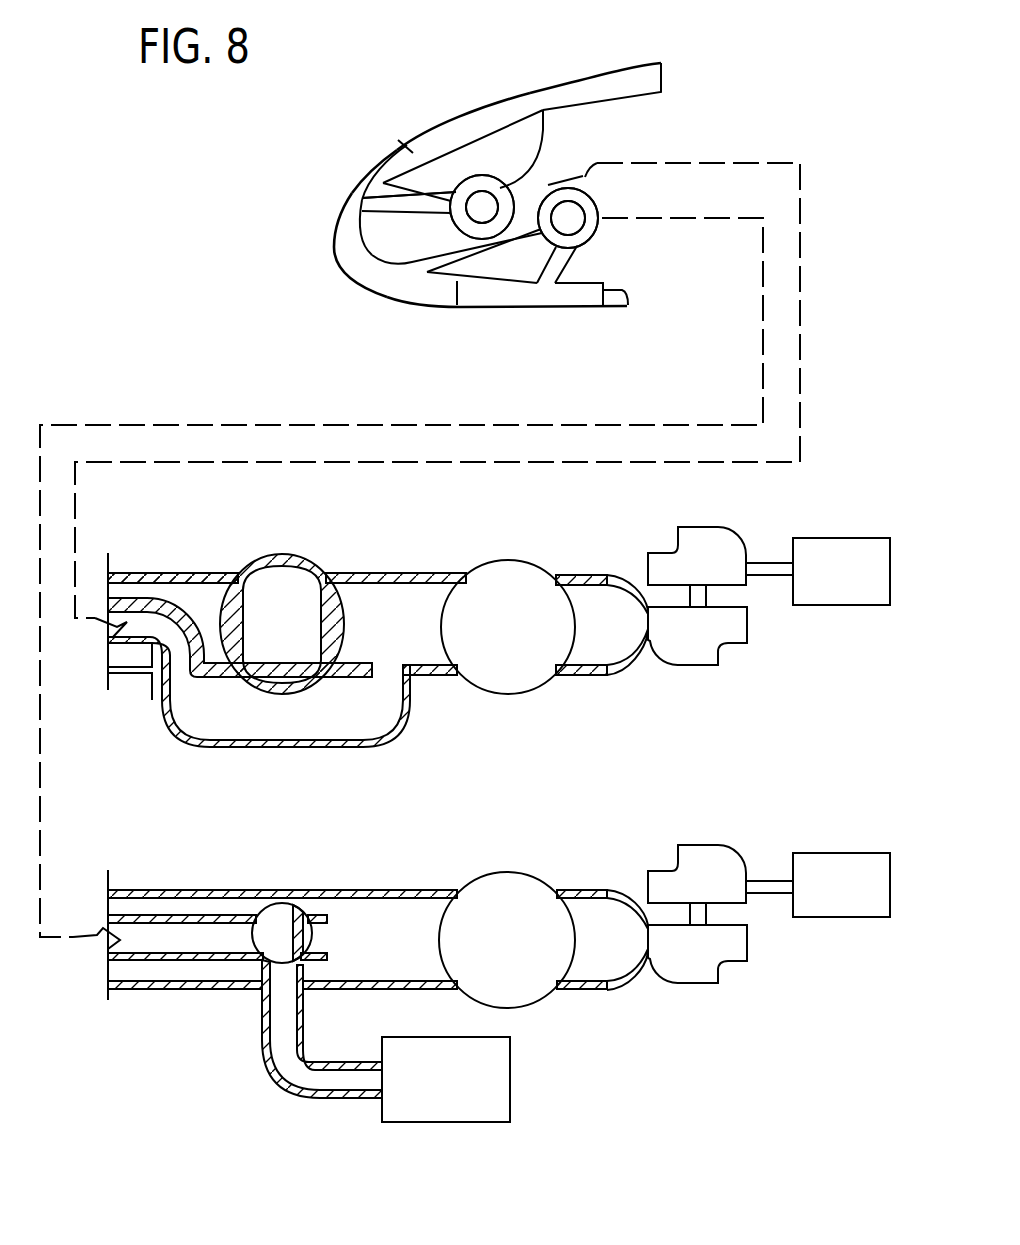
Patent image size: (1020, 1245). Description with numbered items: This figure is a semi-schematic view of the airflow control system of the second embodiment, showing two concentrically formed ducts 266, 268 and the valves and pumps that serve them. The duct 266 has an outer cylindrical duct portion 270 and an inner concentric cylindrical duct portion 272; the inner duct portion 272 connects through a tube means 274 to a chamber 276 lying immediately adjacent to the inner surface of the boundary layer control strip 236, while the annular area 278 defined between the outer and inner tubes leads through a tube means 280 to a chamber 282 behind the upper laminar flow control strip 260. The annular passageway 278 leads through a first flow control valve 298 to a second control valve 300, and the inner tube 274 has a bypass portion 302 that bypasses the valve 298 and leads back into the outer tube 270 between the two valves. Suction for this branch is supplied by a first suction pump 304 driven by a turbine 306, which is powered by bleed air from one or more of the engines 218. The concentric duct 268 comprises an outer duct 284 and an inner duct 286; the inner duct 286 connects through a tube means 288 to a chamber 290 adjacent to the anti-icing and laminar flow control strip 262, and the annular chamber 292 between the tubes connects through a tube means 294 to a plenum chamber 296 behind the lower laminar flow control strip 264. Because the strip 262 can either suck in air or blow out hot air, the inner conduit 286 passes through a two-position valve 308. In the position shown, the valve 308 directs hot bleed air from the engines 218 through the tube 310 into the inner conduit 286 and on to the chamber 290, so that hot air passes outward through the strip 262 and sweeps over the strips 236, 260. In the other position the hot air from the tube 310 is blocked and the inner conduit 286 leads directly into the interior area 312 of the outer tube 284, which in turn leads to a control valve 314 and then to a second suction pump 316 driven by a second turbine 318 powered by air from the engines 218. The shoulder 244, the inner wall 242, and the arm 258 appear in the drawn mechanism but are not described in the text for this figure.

The engines 218 is at (822, 548).
The boundary layer control strip 236 is at (347, 185).
The inner wall 242 is at (360, 248).
The housing shoulder 244 is at (403, 146).
The arm 258 is at (690, 62).
The upper laminar flow control strip 260 is at (493, 178).
The anti-icing and laminar flow control strip 262 is at (365, 283).
The lower laminar flow control strip 264 is at (543, 310).
The concentrically formed duct 266 is at (477, 177).
The concentric duct 268 is at (580, 176).
The outer cylindrical duct portion 270 is at (472, 180).
The inner concentric cylindrical duct portion 272 is at (465, 190).
The tube means 274 is at (353, 237).
The chamber 276 is at (367, 167).
The annular area 278 is at (138, 588).
The tube means 280 is at (550, 128).
The chamber 282 is at (492, 110).
The outer duct 284 is at (592, 188).
The inner duct 286 is at (601, 205).
The tube means 288 is at (480, 262).
The chamber 290 is at (357, 263).
The annular chamber 292 is at (600, 236).
The tube means 294 is at (588, 268).
The plenum chamber 296 is at (603, 290).
The first flow control valve 298 is at (292, 562).
The second control valve 300 is at (498, 573).
The bypass portion 302 is at (280, 738).
The first suction pump 304 is at (720, 643).
The turbine 306 is at (683, 553).
The valve 308 is at (278, 903).
The tube 310 is at (280, 1083).
The interior area 312 is at (365, 922).
The control valve 314 is at (485, 892).
The second suction pump 316 is at (717, 960).
The second turbine 318 is at (663, 868).